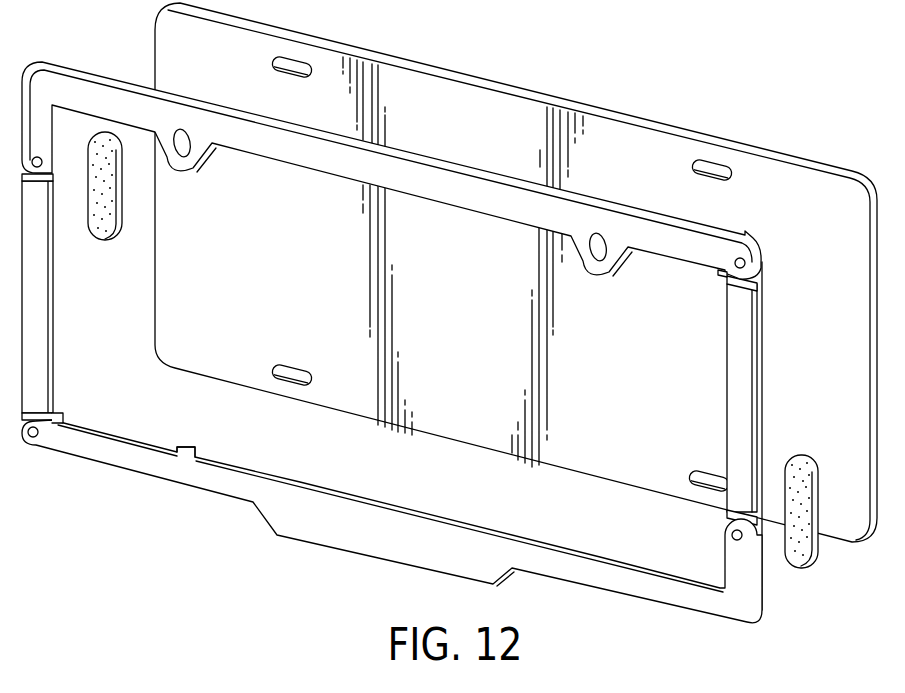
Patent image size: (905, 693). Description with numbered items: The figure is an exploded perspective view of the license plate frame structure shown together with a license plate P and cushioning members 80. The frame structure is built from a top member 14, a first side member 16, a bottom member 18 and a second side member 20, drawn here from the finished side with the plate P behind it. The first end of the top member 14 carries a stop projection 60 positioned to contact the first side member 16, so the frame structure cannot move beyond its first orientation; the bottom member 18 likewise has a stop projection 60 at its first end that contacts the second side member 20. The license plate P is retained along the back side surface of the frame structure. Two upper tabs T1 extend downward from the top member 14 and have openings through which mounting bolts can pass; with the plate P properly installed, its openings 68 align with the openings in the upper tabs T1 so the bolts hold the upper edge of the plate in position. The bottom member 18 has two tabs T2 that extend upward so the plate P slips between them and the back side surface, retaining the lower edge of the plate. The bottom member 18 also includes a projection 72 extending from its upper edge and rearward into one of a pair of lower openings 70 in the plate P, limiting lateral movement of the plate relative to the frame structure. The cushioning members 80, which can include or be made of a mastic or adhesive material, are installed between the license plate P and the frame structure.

The top member 14 is at (110, 83).
The first side member 16 is at (738, 388).
The bottom member 18 is at (331, 518).
The second side member 20 is at (35, 320).
The stop projection 60 is at (57, 414).
The openings 68 is at (284, 74).
The lower openings 70 is at (291, 363).
The projection 72 is at (180, 446).
The cushioning members 80 is at (105, 220).
The license plate P is at (485, 128).
The upper tabs T1 is at (196, 168).
The tabs T2 is at (618, 276).